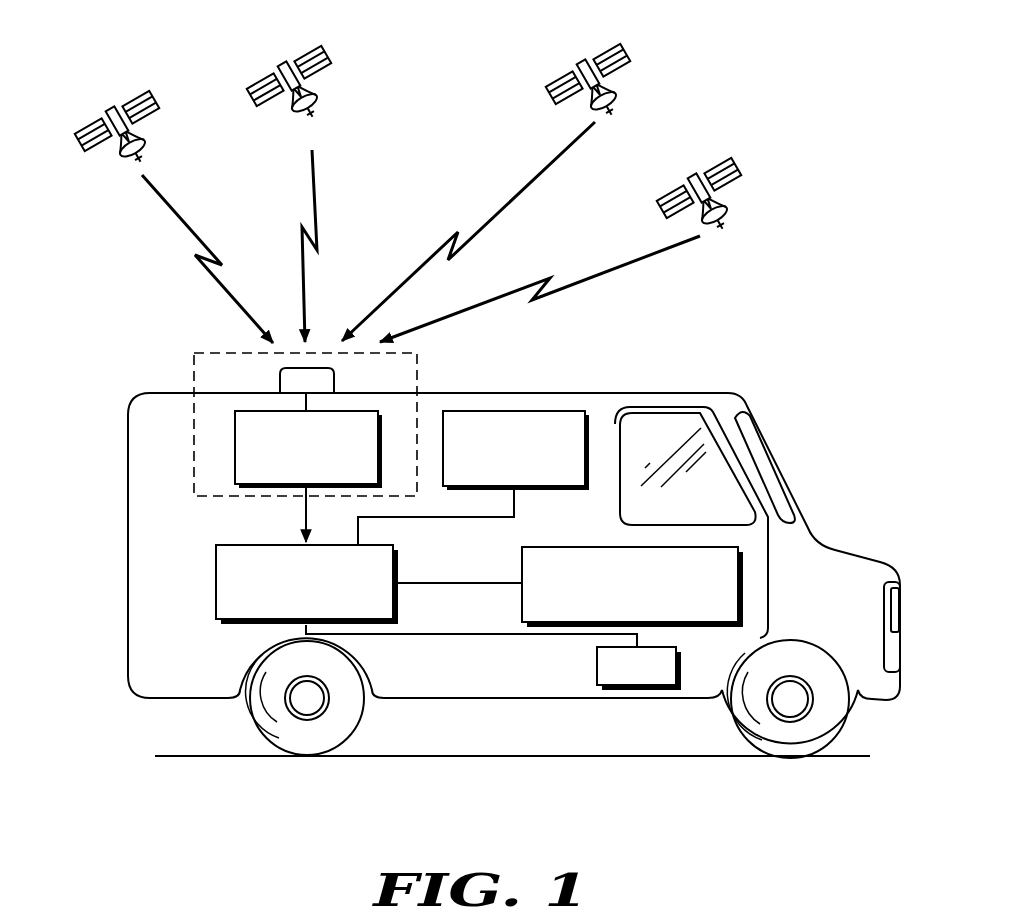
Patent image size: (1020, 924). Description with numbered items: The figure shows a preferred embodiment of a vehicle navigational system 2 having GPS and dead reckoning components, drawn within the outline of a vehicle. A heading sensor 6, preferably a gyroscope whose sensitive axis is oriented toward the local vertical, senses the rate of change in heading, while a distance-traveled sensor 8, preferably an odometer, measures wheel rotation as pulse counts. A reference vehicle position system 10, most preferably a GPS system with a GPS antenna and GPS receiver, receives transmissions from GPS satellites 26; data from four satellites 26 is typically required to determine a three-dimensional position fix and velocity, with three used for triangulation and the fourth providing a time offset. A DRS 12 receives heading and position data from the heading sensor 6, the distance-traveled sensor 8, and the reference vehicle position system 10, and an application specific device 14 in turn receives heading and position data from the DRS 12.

The navigational system 2 is at (127, 546).
The heading sensor 6 is at (637, 694).
The distance-traveled sensor 8 is at (550, 406).
The reference vehicle position system 10 is at (190, 375).
The DRS 12 is at (241, 630).
The application specific device 14 is at (743, 593).
The GPS satellites 26 is at (139, 93).